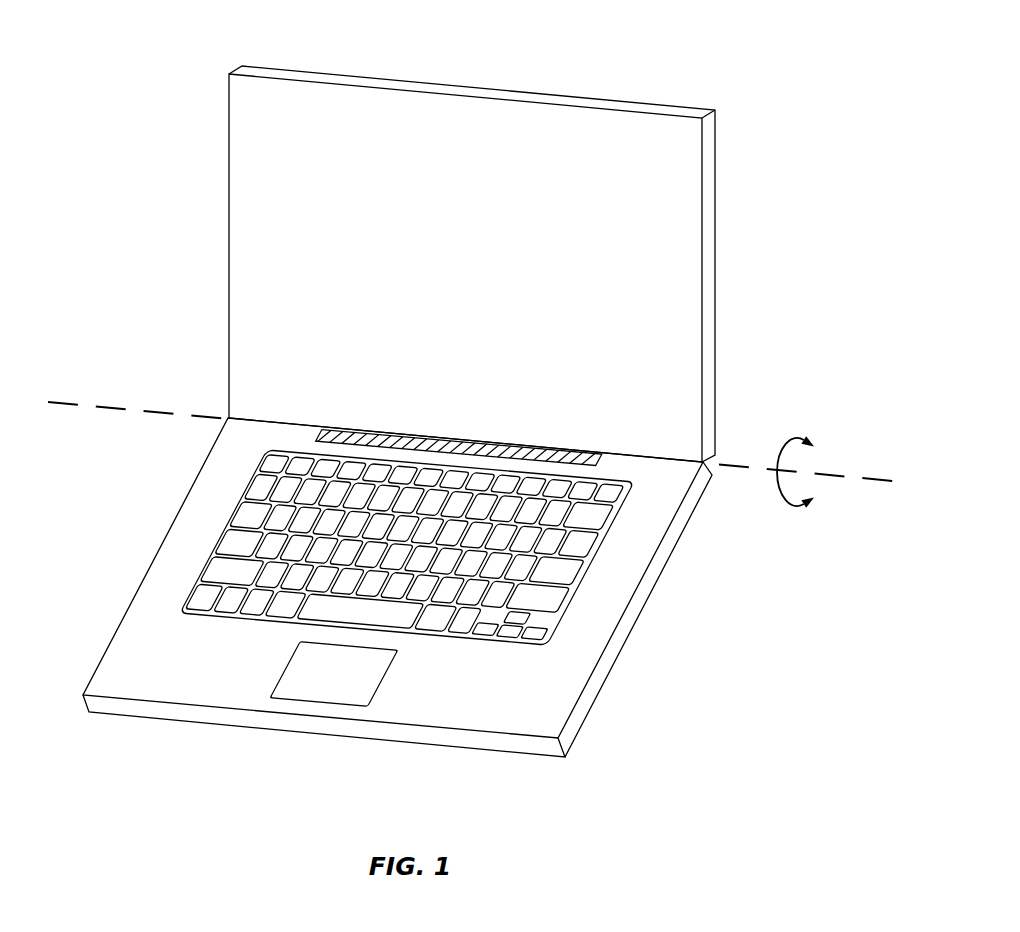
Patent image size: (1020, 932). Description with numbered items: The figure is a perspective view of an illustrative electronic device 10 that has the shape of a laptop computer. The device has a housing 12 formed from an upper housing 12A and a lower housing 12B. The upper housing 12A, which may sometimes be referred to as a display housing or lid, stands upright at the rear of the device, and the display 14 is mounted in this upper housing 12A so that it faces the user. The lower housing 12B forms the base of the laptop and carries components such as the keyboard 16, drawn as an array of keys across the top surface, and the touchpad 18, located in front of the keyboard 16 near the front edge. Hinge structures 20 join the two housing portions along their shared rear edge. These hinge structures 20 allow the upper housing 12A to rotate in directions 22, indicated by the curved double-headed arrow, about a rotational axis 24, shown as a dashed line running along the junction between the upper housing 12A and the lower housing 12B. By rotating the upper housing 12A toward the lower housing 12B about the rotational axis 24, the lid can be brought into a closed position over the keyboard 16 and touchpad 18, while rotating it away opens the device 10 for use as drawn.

The electronic device 10 is at (776, 76).
The housing 12 is at (415, 411).
The upper housing 12A is at (462, 264).
The lower housing 12B is at (375, 586).
The display 14 is at (620, 257).
The keyboard 16 is at (407, 547).
The touchpad 18 is at (333, 674).
The hinge structures 20 is at (459, 448).
The directions 22 is at (802, 510).
The rotational axis 24 is at (67, 400).